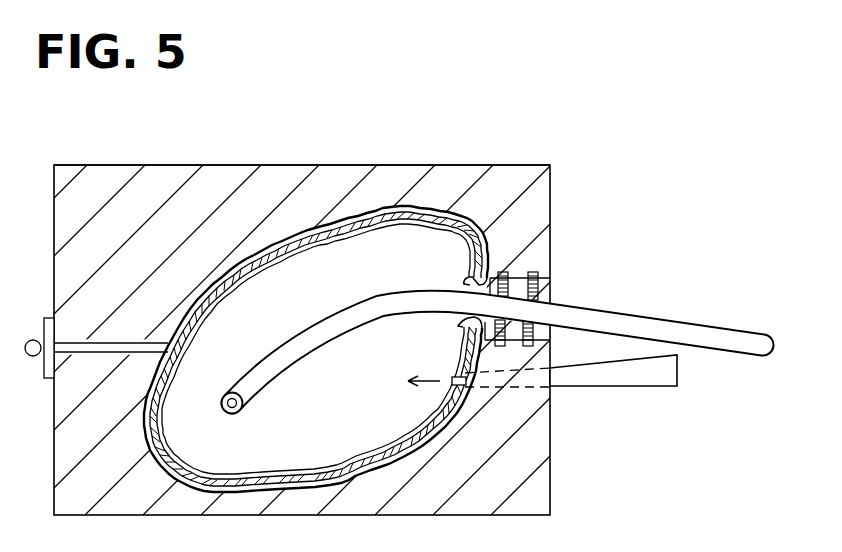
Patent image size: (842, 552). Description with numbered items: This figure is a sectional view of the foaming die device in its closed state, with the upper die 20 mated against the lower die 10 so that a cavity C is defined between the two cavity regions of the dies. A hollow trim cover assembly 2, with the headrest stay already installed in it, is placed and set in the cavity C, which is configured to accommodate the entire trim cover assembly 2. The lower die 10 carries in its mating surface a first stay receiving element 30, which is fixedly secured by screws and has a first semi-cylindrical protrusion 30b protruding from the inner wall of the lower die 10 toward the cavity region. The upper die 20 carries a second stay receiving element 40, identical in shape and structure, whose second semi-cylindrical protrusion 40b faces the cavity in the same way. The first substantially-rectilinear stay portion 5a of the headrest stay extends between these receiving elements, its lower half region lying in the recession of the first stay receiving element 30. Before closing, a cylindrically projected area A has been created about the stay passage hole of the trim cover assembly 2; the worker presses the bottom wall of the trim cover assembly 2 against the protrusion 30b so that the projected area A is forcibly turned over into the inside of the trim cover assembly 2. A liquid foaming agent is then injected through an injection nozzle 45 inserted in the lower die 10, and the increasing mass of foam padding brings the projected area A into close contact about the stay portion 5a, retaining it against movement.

The trim cover assembly 2 is at (306, 233).
The cavity C is at (325, 228).
The upper die 20 is at (510, 175).
The lower die 10 is at (523, 485).
The second stay receiving element 40 is at (517, 277).
The second semi-cylindrical protrusion 40b is at (470, 290).
The first stay receiving element 30 is at (545, 334).
The first semi-cylindrical protrusion 30b is at (455, 328).
The first substantially-rectilinear stay portion 5a is at (690, 320).
The injection nozzle 45 is at (648, 390).
The cylindrically projected area A is at (468, 274).